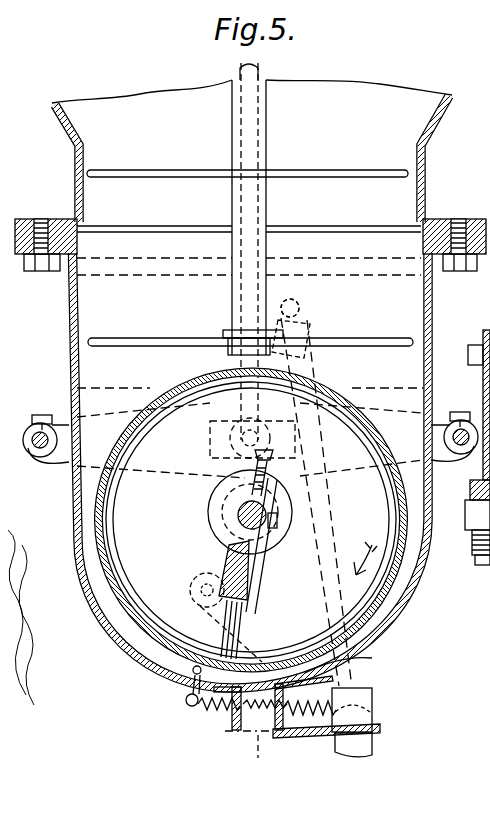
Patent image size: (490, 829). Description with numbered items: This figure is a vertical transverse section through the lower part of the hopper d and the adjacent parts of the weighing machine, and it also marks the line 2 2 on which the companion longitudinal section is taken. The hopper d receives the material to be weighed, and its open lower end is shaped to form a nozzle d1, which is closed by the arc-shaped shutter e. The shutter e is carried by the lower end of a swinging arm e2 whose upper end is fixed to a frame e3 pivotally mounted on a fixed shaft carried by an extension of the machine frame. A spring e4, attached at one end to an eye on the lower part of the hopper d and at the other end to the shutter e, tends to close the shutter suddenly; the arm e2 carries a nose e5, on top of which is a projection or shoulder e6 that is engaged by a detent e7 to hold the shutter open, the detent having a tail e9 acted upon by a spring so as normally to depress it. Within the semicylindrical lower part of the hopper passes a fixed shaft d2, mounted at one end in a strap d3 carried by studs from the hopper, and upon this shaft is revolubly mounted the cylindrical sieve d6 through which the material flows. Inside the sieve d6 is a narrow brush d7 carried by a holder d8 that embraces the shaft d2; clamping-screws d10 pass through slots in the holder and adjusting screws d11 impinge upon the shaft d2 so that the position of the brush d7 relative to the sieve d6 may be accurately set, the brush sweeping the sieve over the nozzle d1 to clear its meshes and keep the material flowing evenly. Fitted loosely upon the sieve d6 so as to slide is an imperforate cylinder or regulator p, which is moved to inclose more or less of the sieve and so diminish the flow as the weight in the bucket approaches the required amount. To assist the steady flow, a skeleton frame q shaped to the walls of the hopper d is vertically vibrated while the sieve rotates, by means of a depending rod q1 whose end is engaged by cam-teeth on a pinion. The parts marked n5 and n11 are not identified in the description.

The section line 2 is at (252, 65).
The skeleton frame q is at (318, 171).
The depending rod q1 is at (263, 77).
The hopper d is at (426, 182).
The cylindrical sieve d6 is at (118, 594).
The frame e3 is at (300, 311).
The swinging arm e2 is at (322, 540).
The trunnion bearing n5 is at (50, 455).
The bearing bracket n11 is at (62, 470).
The clamping-screws d10 is at (272, 517).
The fixed shaft d2 is at (237, 520).
The adjusting screws d11 is at (240, 468).
The holder d8 is at (272, 537).
The nozzle d1 is at (255, 596).
The tail e9 is at (203, 596).
The brush d7 is at (232, 715).
The shutter e is at (372, 722).
The spring e4 is at (330, 690).
The shoulder e6 is at (372, 698).
The nose e5 is at (372, 742).
The detent e7 is at (372, 658).
The regulator p is at (102, 604).
The strap d3 is at (483, 332).